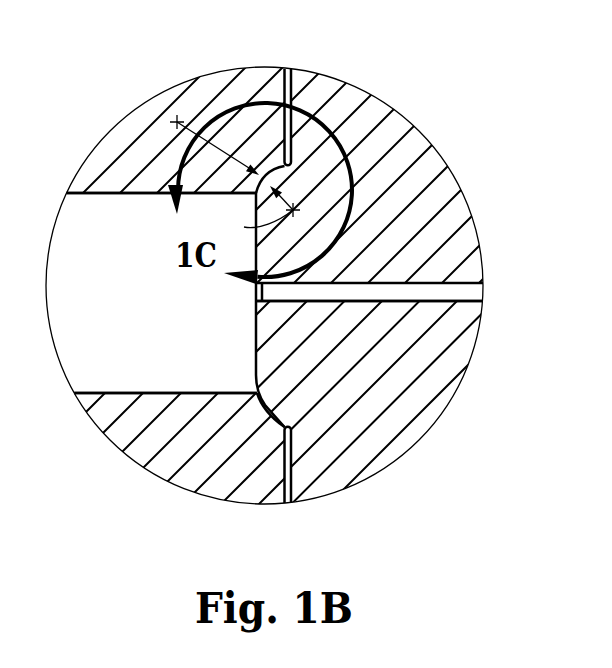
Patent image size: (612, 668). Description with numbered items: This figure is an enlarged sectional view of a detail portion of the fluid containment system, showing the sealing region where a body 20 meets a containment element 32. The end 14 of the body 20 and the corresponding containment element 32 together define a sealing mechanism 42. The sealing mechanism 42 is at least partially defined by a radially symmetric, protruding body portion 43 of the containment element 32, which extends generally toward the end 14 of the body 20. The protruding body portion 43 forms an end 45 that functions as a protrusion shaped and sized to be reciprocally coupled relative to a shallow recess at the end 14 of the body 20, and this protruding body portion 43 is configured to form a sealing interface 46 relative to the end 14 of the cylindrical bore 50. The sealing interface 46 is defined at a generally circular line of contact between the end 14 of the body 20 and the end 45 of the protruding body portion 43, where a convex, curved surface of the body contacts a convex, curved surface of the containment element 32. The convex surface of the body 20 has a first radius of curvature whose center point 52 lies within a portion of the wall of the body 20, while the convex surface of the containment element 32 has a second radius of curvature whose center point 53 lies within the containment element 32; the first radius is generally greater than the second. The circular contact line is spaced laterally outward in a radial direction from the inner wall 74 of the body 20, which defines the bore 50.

The end 14 is at (271, 77).
The body 20 is at (117, 436).
The containment element 32 is at (366, 452).
The sealing mechanism 42 is at (388, 399).
The protruding body portion 43 is at (329, 356).
The end 45 is at (253, 327).
The sealing interface 46 is at (290, 181).
The cylindrical bore 50 is at (109, 306).
The center point 52 is at (192, 101).
The center point 53 is at (316, 231).
The inner wall 74 is at (130, 195).